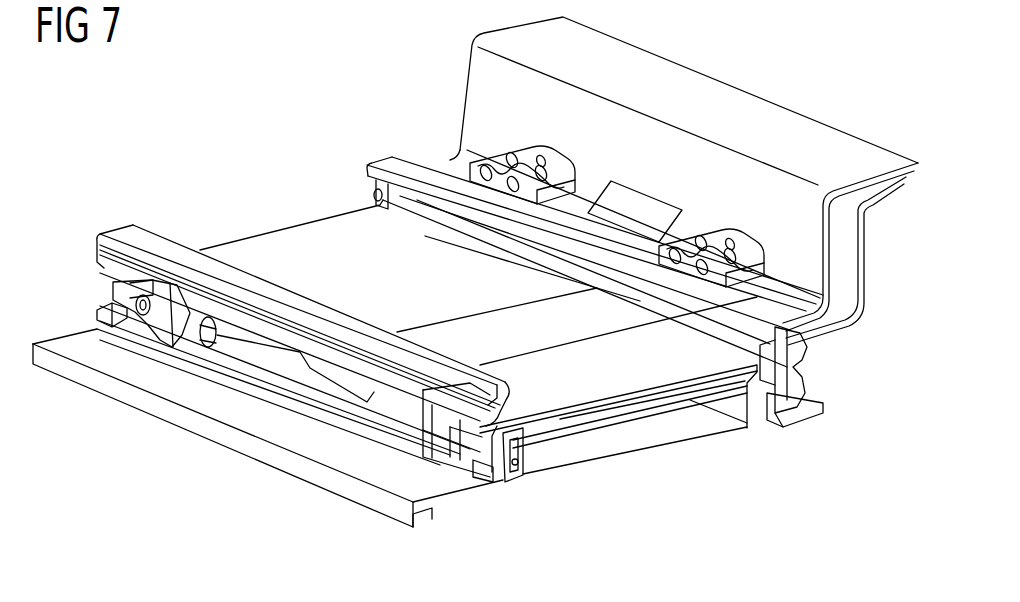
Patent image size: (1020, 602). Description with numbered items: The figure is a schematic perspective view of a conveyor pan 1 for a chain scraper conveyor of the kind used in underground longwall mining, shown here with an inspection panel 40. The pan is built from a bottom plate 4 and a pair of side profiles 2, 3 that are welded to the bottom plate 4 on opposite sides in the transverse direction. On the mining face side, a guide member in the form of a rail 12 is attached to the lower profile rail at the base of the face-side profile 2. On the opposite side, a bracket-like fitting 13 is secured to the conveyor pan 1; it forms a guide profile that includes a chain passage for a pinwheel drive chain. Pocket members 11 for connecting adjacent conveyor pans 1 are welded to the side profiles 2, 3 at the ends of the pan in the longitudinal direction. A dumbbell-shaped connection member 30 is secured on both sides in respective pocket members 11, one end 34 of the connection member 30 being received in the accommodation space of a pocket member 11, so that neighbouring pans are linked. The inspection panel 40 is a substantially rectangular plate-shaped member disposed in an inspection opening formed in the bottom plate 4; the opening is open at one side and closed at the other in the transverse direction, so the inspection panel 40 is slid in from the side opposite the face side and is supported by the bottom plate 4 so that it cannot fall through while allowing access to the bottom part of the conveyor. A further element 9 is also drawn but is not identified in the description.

The conveyor pan 1 is at (192, 121).
The face-side profile 2 is at (94, 194).
The side profile 3 is at (398, 133).
The bottom plate 4 is at (310, 235).
The lower frame member 9 is at (640, 449).
The pocket member 11 is at (803, 388).
The rail 12 is at (318, 473).
The bracket-like fitting 13 is at (858, 281).
The connection member 30 is at (448, 487).
The end of connection member 34 is at (500, 480).
The inspection panel 40 is at (485, 325).